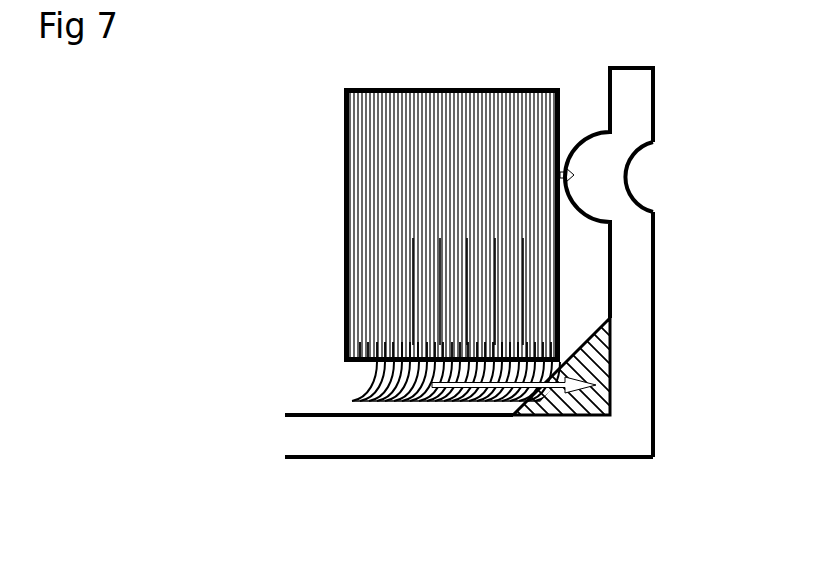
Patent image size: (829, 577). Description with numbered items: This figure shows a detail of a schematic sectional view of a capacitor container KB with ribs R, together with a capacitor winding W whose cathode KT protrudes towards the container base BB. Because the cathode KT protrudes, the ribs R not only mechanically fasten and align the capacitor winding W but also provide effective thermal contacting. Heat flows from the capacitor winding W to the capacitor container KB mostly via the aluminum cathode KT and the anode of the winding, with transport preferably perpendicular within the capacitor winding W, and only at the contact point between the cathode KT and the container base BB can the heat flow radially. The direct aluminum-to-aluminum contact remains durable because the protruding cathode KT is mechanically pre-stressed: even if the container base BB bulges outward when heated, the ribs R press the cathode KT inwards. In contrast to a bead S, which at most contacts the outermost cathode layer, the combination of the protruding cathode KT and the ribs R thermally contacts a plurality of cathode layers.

The capacitor winding W is at (373, 104).
The bead S is at (603, 178).
The capacitor container KB is at (634, 278).
The ribs R is at (608, 350).
The cathode KT is at (362, 396).
The container base BB is at (470, 437).